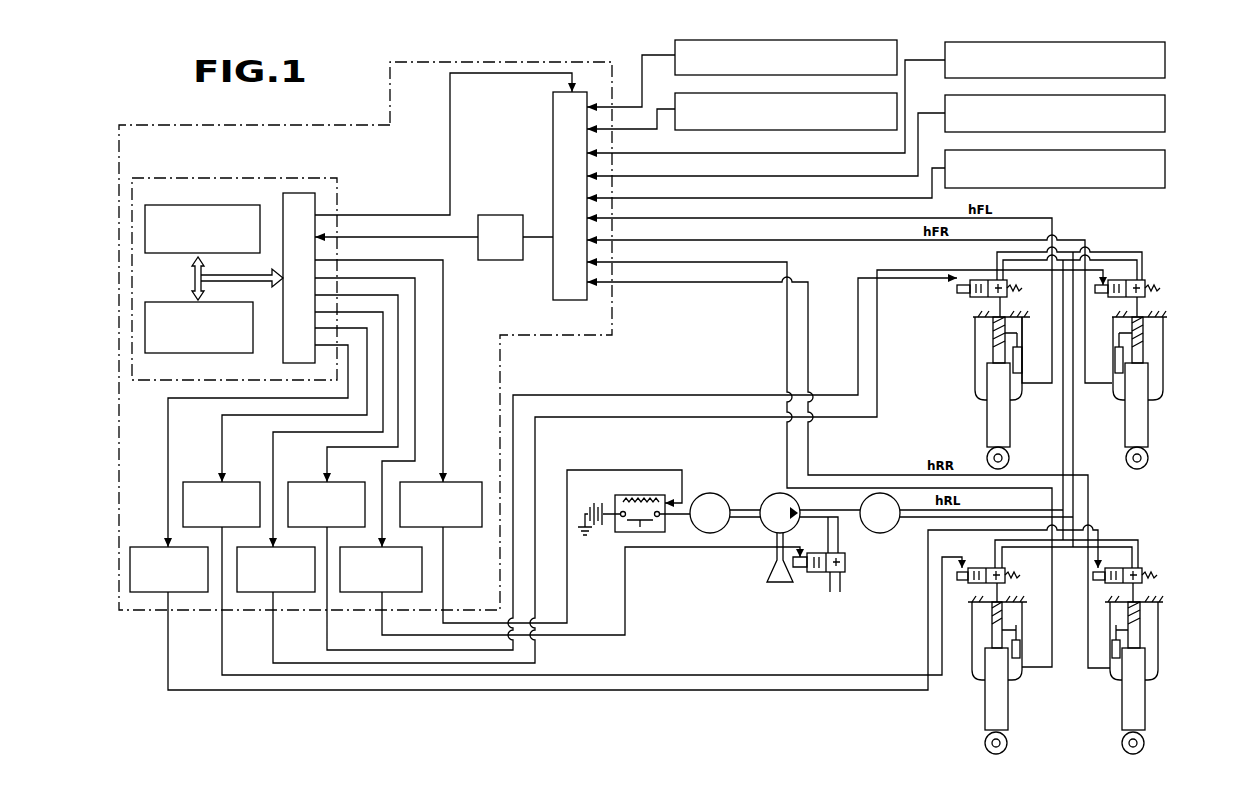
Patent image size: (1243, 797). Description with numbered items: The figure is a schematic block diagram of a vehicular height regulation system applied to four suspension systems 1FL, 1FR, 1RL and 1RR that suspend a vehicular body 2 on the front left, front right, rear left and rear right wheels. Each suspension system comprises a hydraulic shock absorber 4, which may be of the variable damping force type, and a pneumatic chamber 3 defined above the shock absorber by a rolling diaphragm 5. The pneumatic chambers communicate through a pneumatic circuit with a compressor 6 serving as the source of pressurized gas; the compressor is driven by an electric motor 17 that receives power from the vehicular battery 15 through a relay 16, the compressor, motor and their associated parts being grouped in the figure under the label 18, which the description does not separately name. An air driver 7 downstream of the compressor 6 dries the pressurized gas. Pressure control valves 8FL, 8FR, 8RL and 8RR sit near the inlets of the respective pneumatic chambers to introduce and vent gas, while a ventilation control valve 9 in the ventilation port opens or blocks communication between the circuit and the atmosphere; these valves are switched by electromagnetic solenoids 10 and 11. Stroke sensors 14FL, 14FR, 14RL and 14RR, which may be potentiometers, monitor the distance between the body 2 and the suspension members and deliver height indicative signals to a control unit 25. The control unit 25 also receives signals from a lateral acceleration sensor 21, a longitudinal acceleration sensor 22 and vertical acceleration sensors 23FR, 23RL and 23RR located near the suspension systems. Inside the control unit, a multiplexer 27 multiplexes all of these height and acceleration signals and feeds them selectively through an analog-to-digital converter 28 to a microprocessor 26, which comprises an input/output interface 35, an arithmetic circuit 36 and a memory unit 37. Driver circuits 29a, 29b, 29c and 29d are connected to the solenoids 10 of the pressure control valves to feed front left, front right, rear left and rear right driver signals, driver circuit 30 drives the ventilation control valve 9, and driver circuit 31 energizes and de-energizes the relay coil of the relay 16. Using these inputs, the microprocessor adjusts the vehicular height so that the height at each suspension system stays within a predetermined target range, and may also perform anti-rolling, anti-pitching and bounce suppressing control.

The front left suspension system 1FL is at (985, 411).
The front right suspension system 1FR is at (1150, 413).
The rear left suspension system 1RL is at (975, 709).
The rear right suspension system 1RR is at (1150, 693).
The vehicular body 2 is at (975, 320).
The pneumatic chamber 3 is at (975, 360).
The hydraulic shock absorber 4 is at (987, 445).
The rolling diaphragm 5 is at (975, 385).
The compressor 6 is at (768, 499).
The air driver 7 is at (894, 528).
The front left pressure control valve 8FL is at (985, 280).
The front right pressure control valve 8FR is at (1140, 280).
The rear left pressure control valve 8RL is at (988, 568).
The rear right pressure control valve 8RR is at (1140, 568).
The ventilation control valve 9 is at (822, 575).
The electromagnetic solenoid 10 is at (960, 293).
The electromagnetic solenoid 11 is at (792, 576).
The front left stroke sensor 14FL is at (1020, 370).
The front right stroke sensor 14FR is at (1117, 373).
The rear left stroke sensor 14RL is at (1018, 660).
The rear right stroke sensor 14RR is at (1113, 658).
The vehicular battery 15 is at (594, 505).
The relay 16 is at (655, 532).
The electric motor 17 is at (705, 494).
The hydraulic pressure source 18 is at (760, 550).
The lateral acceleration sensor 21 is at (675, 50).
The longitudinal acceleration sensor 22 is at (680, 95).
The front right vertical acceleration sensor 23FR is at (1165, 58).
The rear left vertical acceleration sensor 23RL is at (1165, 110).
The rear right vertical acceleration sensor 23RR is at (1165, 166).
The control unit 25 is at (490, 63).
The microprocessor 26 is at (299, 178).
The multiplexer 27 is at (553, 130).
The analog-to-digital converter 28 is at (505, 215).
The driver circuit 29a is at (300, 482).
The driver circuit 29b is at (256, 592).
The driver circuit 29c is at (193, 482).
The driver circuit 29d is at (152, 547).
The driver circuit 30 is at (422, 572).
The driver circuit 31 is at (450, 482).
The input/output interface 35 is at (315, 200).
The arithmetic circuit 36 is at (213, 205).
The memory unit 37 is at (168, 302).